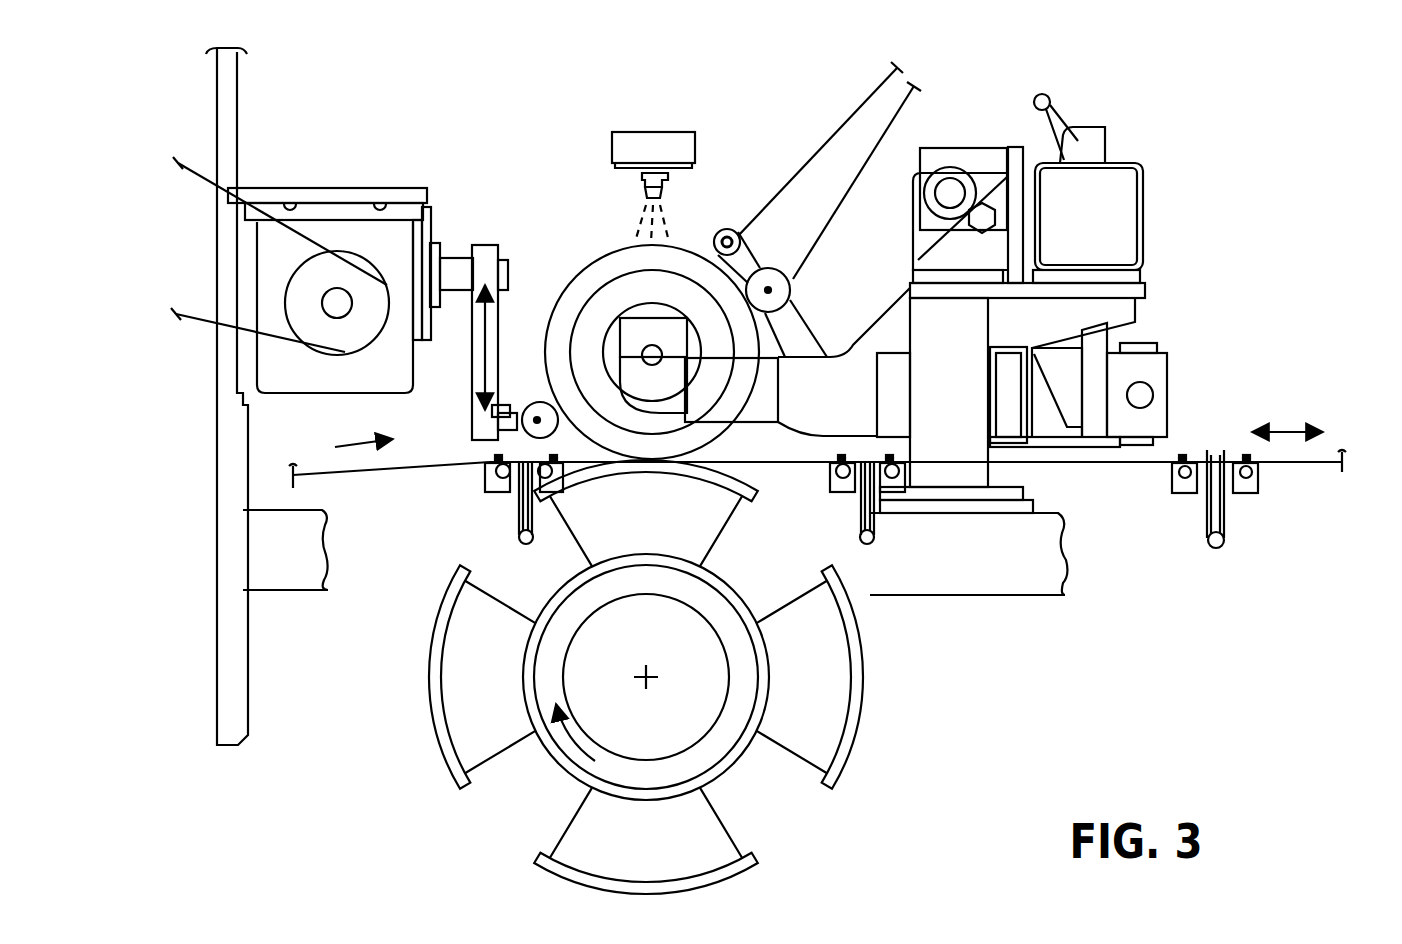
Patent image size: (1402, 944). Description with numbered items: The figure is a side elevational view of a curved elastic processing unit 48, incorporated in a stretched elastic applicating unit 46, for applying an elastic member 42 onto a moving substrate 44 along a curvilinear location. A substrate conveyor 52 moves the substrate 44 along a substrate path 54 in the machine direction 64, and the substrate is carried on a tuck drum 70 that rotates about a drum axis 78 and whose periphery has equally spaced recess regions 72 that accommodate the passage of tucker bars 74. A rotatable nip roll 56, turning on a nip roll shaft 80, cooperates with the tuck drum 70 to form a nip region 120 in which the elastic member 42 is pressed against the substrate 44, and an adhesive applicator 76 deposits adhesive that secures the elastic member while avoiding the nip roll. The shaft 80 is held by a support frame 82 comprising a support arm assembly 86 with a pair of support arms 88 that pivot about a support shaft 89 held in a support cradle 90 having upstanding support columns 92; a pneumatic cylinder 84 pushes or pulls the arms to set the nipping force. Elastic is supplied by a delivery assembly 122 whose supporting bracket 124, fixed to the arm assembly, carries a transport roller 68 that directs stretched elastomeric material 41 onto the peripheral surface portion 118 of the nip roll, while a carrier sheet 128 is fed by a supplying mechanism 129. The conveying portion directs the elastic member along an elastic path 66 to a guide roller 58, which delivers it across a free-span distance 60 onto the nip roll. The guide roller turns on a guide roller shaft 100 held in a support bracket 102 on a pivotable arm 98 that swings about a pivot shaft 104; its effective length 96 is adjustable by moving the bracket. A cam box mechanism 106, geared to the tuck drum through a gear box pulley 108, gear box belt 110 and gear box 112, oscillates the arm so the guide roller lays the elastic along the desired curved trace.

The elastomeric material 41 is at (861, 106).
The elastic member 42 is at (527, 395).
The substrate 44 is at (322, 477).
The stretched elastic applicating unit 46 is at (290, 585).
The curved elastic processing unit 48 is at (443, 114).
The substrate conveyor 52 is at (1178, 495).
The substrate path 54 is at (350, 440).
The nip roll 56 is at (594, 272).
The guide roller 58 is at (487, 455).
The free-span distance 60 is at (567, 474).
The machine direction 64 is at (1287, 432).
The elastic path 66 is at (521, 362).
The transport roller 68 is at (730, 228).
The tuck drum 70 is at (843, 673).
The recess regions 72 is at (808, 813).
The tucker bars 74 is at (518, 537).
The adhesive applicator 76 is at (668, 136).
The drum axis 78 is at (650, 671).
The nip roll shaft 80 is at (649, 361).
The support frame 82 is at (969, 150).
The pneumatic cylinder 84 is at (1141, 347).
The support arm assembly 86 is at (1006, 133).
The support arms 88 is at (860, 347).
The support shaft 89 is at (916, 175).
The support cradle 90 is at (912, 244).
The support columns 92 is at (1012, 330).
The effective length 96 is at (472, 340).
The pivotable arm 98 is at (480, 381).
The guide roller shaft 100 is at (552, 404).
The support bracket 102 is at (477, 421).
The pivot shaft 104 is at (452, 256).
The cam box mechanism 106 is at (432, 223).
The gear box pulley 108 is at (297, 286).
The gear box belt 110 is at (180, 162).
The gear box 112 is at (281, 373).
The peripheral surface portion 118 is at (631, 238).
The nip region 120 is at (716, 451).
The delivery assembly 122 is at (724, 228).
The supporting bracket 124 is at (816, 352).
The carrier sheet 128 is at (924, 104).
The supplying mechanism 129 is at (789, 286).